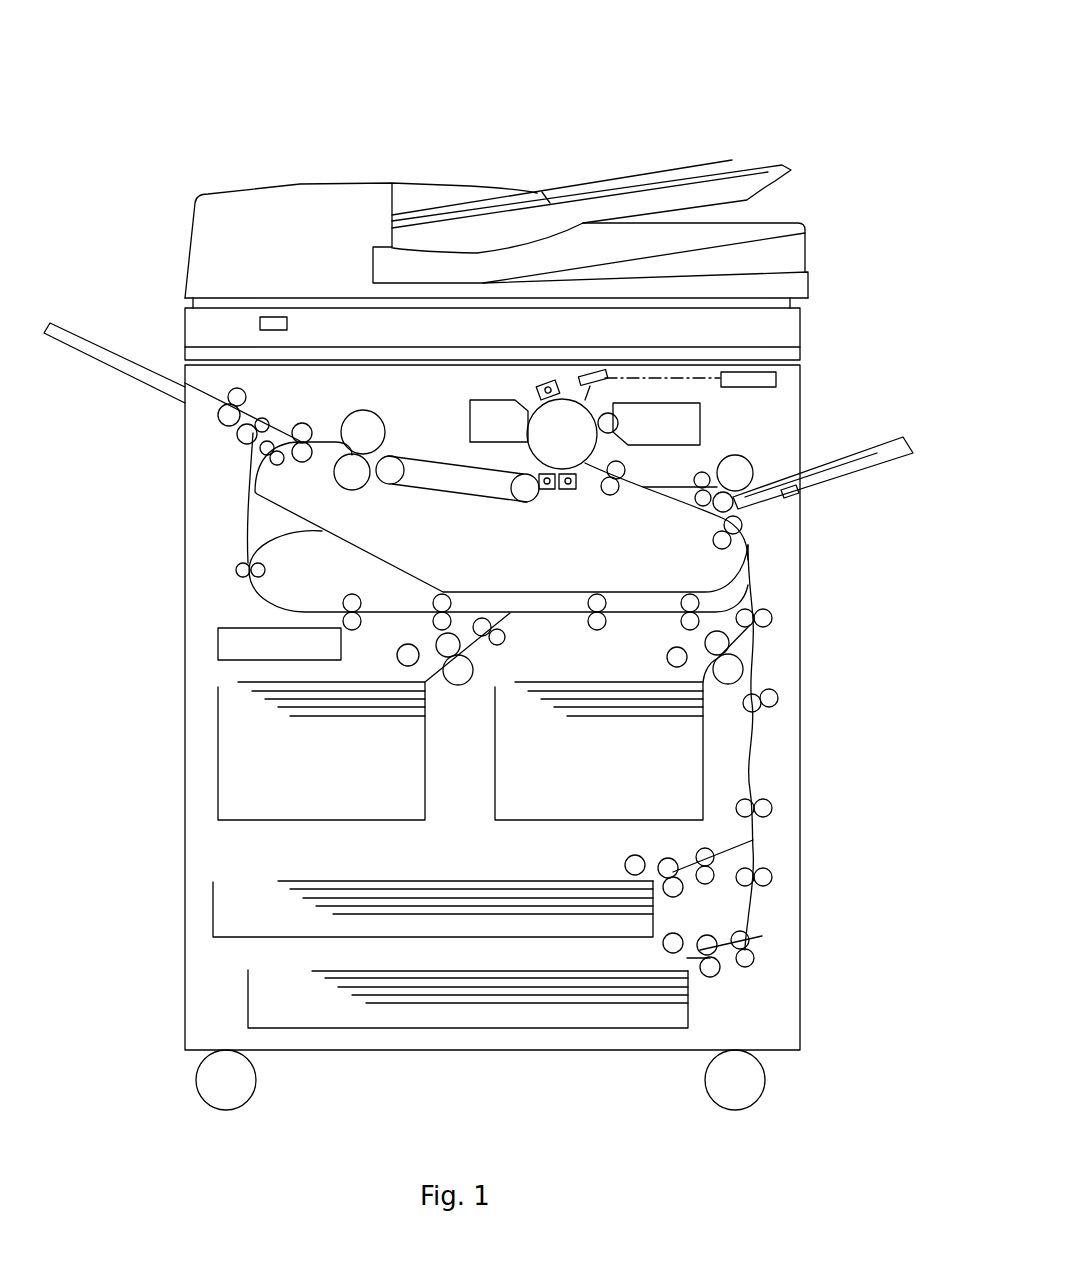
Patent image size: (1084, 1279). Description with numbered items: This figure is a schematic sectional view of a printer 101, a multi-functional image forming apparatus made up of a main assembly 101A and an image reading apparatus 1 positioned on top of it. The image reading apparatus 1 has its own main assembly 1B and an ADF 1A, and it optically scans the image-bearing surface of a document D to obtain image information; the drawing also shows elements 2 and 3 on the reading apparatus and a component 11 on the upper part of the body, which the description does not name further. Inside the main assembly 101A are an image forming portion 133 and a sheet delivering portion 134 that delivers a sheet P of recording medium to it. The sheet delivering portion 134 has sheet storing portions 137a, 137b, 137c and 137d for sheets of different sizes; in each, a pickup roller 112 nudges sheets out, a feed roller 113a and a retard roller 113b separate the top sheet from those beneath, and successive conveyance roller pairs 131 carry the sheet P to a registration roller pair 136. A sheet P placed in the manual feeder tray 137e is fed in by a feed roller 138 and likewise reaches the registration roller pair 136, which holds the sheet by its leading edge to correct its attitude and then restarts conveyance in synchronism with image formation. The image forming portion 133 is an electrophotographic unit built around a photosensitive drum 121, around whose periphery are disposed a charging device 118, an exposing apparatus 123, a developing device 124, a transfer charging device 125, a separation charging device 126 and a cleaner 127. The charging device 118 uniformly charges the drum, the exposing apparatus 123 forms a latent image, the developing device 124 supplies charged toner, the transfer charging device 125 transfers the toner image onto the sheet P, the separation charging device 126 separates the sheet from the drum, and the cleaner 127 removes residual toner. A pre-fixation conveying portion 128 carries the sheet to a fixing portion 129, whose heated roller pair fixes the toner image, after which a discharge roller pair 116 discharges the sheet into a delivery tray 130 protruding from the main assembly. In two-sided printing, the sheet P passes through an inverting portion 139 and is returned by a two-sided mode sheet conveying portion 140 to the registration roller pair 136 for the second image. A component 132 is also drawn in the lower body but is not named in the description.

The printer 101 is at (445, 78).
The image reading apparatus 1 is at (577, 227).
The ADF 1A is at (558, 196).
The main assembly of image reading apparatus 1B is at (835, 322).
The document feed tray 2 is at (775, 165).
The document discharge tray 3 is at (780, 225).
The document D is at (690, 165).
The operation panel 11 is at (288, 323).
The main assembly 101A is at (830, 392).
The charging device 118 is at (549, 374).
The photosensitive drum 121 is at (536, 393).
The exposing apparatus 123 is at (801, 372).
The developing device 124 is at (687, 427).
The cleaner 127 is at (470, 422).
The fixing portion 129 is at (353, 418).
The image forming portion 133 is at (505, 466).
The inverting portion 139 is at (360, 537).
The pre-fixation conveying portion 128 is at (457, 468).
The transfer charging device 125 is at (580, 492).
The separation charging device 126 is at (547, 493).
The registration roller pair 136 is at (620, 482).
The feed roller 138 is at (738, 462).
The manual feeder tray 137e is at (873, 465).
The delivery tray 130 is at (75, 352).
The discharge roller pair 116 is at (224, 425).
The two-sided mode sheet conveying portion 140 is at (225, 594).
The control unit 132 is at (218, 645).
The sheet delivering portion 134 is at (828, 738).
The conveyance roller pair 131 is at (505, 636).
The pickup roller 112 is at (397, 655).
The feed roller 113a is at (473, 627).
The retard roller 113b is at (463, 680).
The sheet P is at (560, 681).
The sheet storing portion 137a is at (248, 1000).
The sheet storing portion 137b is at (213, 912).
The sheet storing portion 137c is at (218, 762).
The sheet storing portion 137d is at (493, 790).